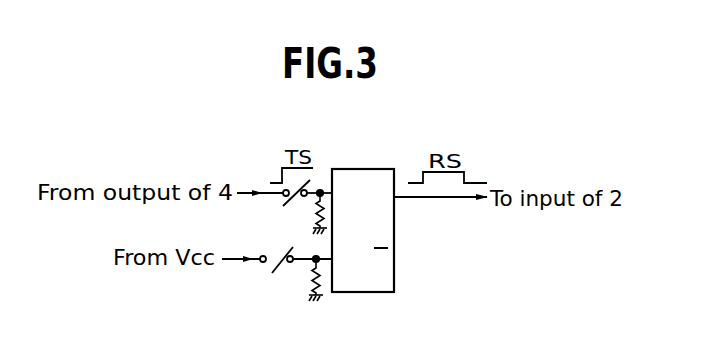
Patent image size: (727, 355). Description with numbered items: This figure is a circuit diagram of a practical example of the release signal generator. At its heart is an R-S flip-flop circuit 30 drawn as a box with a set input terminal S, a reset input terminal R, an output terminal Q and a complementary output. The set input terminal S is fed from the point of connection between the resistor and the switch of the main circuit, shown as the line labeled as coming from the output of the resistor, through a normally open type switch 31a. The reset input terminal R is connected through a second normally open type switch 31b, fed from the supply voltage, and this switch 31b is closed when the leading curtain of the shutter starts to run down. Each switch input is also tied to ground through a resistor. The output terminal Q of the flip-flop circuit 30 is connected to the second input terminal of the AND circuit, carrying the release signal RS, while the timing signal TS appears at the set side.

The R-S flip-flop circuit 30 is at (394, 228).
The normally open type switch 31a is at (295, 207).
The normally open type switch 31b is at (292, 274).